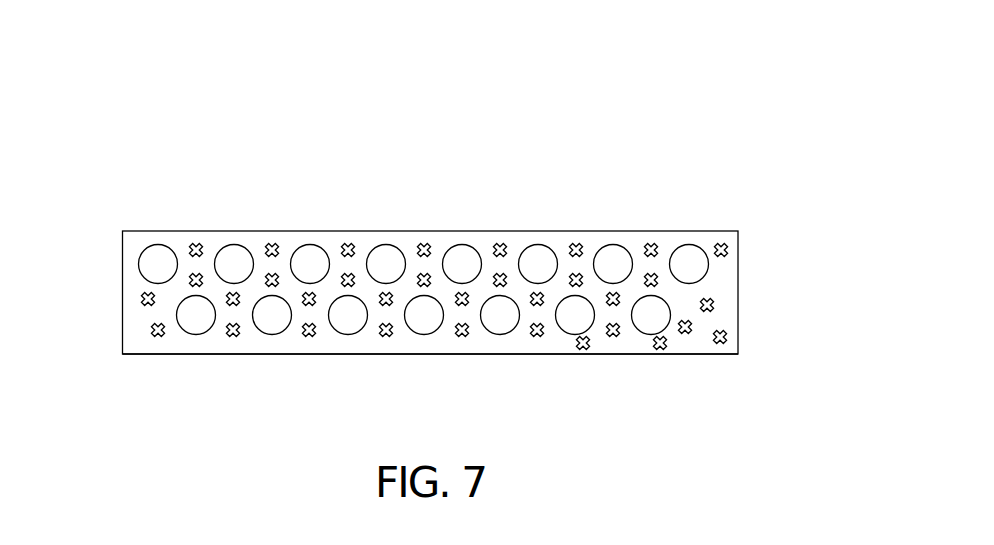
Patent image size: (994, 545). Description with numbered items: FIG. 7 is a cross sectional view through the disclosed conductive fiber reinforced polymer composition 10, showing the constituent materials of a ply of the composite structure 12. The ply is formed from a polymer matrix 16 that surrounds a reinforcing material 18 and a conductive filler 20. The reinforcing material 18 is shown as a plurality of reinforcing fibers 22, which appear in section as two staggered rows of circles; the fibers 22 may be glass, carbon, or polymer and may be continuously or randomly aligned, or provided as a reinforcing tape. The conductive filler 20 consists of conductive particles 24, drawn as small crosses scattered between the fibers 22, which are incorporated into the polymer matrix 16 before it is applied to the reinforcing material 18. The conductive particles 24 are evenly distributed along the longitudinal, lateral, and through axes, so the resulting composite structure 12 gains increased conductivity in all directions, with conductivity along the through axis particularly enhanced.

The intake air heater assembly 10 is at (455, 236).
The composite structure 12 is at (461, 246).
The polymer matrix 16 is at (427, 389).
The reinforcing material 18 is at (132, 226).
The conductive filler 20 is at (760, 321).
The reinforcing fibers 22 is at (233, 257).
The conductive particles 24 is at (423, 248).